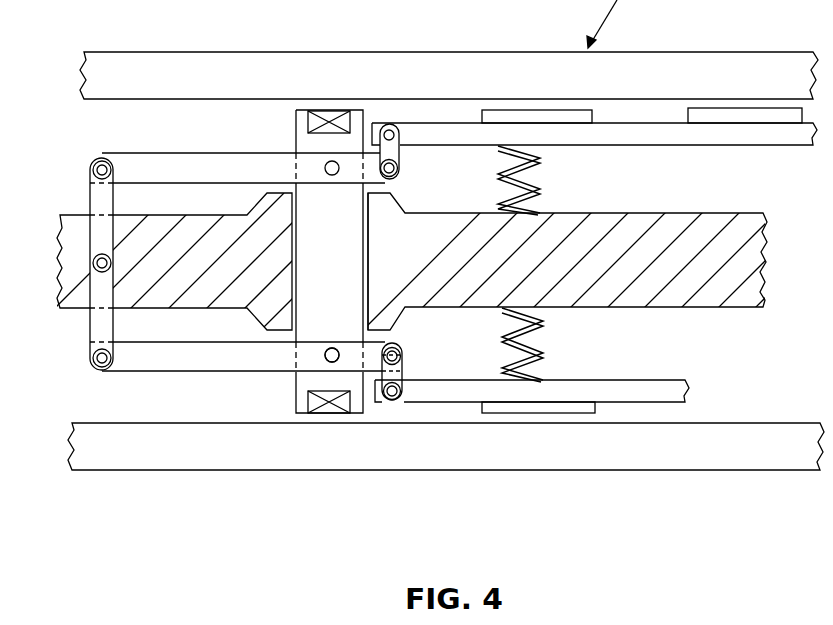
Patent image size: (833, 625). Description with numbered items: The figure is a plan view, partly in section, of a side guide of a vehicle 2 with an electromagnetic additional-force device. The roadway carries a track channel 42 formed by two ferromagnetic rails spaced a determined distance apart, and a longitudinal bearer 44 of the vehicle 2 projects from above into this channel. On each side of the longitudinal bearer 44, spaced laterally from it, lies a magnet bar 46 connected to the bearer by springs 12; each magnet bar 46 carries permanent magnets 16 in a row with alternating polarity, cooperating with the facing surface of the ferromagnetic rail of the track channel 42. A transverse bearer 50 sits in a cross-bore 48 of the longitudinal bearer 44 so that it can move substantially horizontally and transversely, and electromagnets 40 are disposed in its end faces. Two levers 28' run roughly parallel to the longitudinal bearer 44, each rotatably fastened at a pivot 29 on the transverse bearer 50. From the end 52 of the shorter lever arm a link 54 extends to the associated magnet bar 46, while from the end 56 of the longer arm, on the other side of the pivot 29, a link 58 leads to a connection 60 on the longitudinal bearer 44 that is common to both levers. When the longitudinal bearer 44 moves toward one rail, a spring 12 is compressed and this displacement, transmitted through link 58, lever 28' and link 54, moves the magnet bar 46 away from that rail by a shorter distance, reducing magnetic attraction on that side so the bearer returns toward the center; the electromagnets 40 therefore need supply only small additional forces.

The vehicle 2 is at (192, 391).
The springs 12 is at (541, 183).
The permanent magnets 16 is at (760, 115).
The levers 28' is at (243, 266).
The pivot 29 is at (326, 362).
The electromagnets 40 is at (330, 118).
The track channel 42 is at (714, 58).
The longitudinal bearer 44 is at (600, 297).
The magnet bar 46 is at (659, 133).
The cross-bore 48 is at (370, 318).
The transverse bearer 50 is at (314, 285).
The end of shorter lever arm 52 is at (396, 173).
The link 54 is at (394, 150).
The end of longer lever arm 56 is at (102, 160).
The link 58 is at (97, 203).
The connection 60 is at (100, 274).